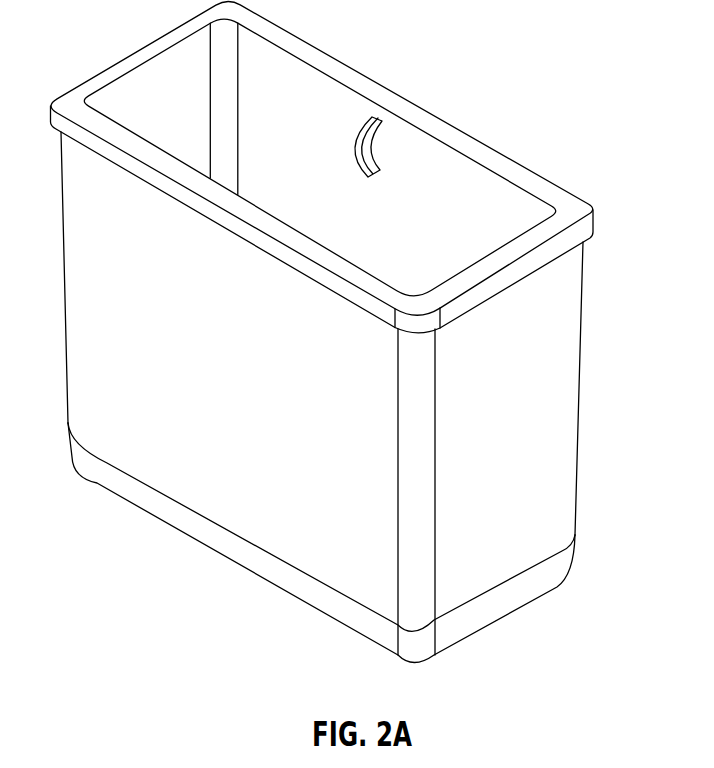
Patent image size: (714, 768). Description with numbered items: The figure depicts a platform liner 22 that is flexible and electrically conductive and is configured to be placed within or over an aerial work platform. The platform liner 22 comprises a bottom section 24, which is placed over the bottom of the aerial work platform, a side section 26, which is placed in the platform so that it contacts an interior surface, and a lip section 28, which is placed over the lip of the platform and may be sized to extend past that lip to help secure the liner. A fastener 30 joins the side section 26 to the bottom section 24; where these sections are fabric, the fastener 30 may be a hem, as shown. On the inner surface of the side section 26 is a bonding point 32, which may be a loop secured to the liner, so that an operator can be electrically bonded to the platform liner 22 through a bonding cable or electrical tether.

The platform liner 22 is at (351, 351).
The bottom section 24 is at (478, 633).
The side section 26 is at (583, 312).
The lip section 28 is at (93, 78).
The fastener 30 is at (577, 535).
The bonding point 32 is at (366, 119).